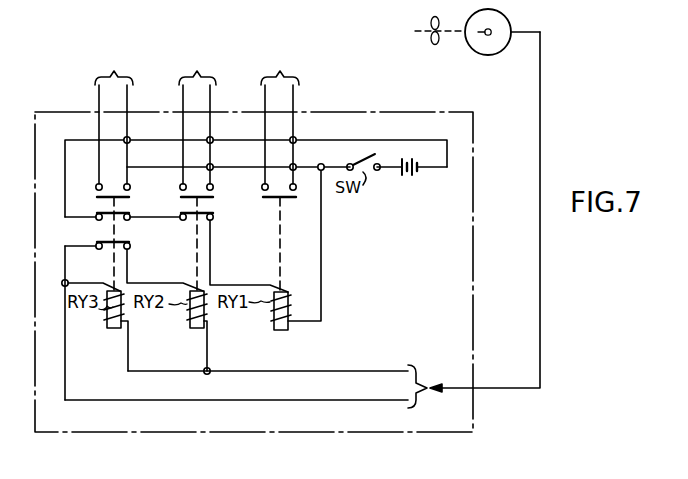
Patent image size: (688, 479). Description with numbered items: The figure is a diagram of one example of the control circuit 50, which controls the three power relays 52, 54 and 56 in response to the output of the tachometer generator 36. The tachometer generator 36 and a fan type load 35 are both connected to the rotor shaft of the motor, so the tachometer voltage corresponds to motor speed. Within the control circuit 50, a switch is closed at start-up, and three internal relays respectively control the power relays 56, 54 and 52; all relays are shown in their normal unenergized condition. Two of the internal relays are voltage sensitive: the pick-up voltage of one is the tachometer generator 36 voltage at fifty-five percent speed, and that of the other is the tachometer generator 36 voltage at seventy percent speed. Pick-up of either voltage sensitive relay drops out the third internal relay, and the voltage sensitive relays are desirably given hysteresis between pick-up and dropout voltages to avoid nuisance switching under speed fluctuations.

The fan type load 35 is at (432, 24).
The tachometer generator 36 is at (508, 22).
The control circuit 50 is at (461, 111).
The power relay 52 is at (114, 66).
The power relay 54 is at (197, 66).
The power relay 56 is at (280, 66).